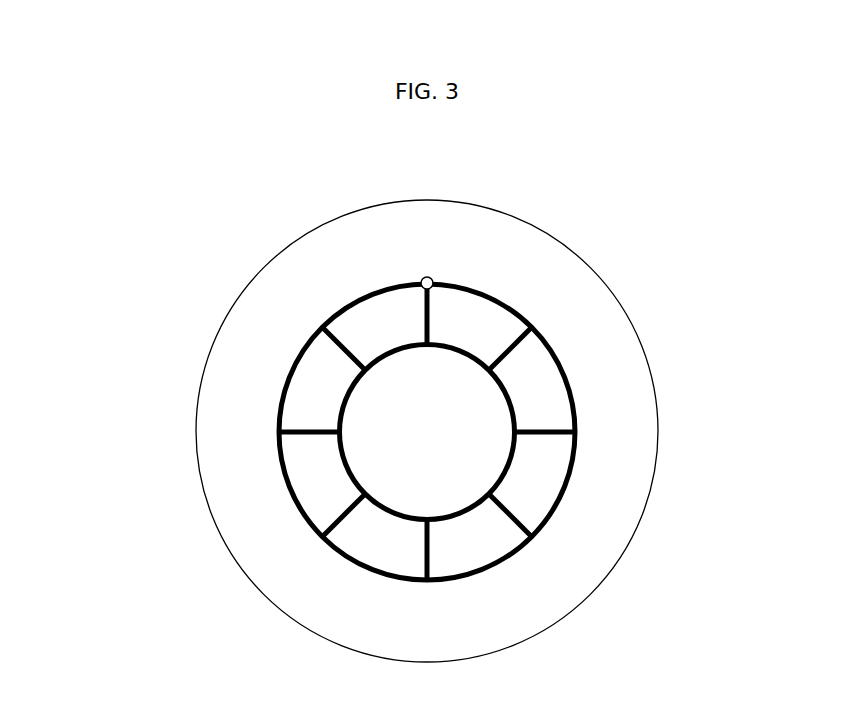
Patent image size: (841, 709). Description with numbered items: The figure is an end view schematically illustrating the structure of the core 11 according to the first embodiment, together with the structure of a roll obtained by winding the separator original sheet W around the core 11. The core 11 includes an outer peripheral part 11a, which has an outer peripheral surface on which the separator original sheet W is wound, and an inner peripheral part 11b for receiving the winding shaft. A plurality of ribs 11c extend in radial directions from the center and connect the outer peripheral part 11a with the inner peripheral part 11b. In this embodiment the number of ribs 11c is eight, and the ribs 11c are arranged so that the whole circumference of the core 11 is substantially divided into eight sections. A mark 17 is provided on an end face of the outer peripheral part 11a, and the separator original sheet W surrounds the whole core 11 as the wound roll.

The separator original sheet W is at (603, 501).
The core 11 is at (304, 432).
The outer peripheral part 11a is at (324, 333).
The inner peripheral part 11b is at (345, 469).
The ribs 11c is at (340, 350).
The mark 17 is at (434, 283).